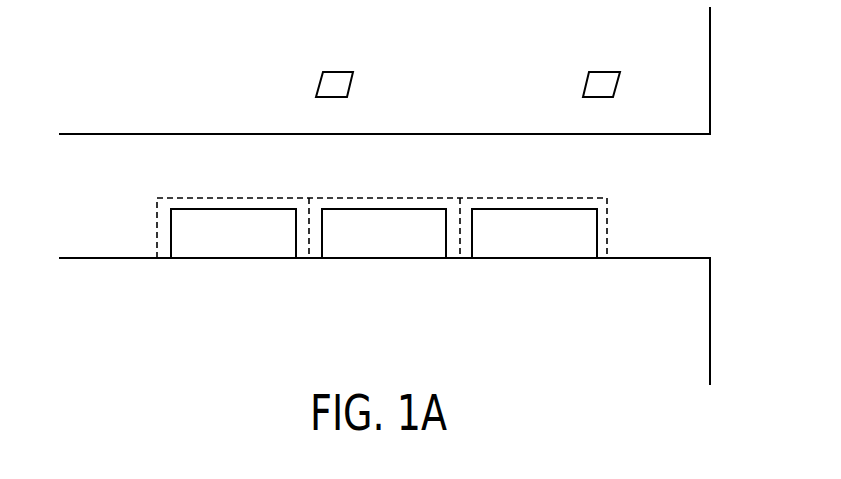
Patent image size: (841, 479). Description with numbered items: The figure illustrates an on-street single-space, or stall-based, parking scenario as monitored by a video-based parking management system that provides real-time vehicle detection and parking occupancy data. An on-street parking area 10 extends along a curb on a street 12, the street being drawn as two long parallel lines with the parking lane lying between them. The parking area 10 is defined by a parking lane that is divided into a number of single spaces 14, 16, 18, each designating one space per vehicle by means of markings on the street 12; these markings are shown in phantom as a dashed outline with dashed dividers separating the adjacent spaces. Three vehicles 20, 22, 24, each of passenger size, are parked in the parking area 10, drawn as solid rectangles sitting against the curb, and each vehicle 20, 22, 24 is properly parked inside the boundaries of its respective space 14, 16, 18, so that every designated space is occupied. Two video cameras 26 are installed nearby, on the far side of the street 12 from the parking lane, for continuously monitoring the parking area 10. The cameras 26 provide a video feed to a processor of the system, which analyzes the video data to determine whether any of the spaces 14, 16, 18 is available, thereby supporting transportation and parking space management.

The on-street parking area 10 is at (627, 213).
The street 12 is at (671, 169).
The single space 14 is at (235, 197).
The single space 16 is at (384, 197).
The single space 18 is at (529, 197).
The vehicle 20 is at (197, 209).
The vehicle 22 is at (347, 209).
The vehicle 24 is at (497, 209).
The video camera 26 is at (337, 72).